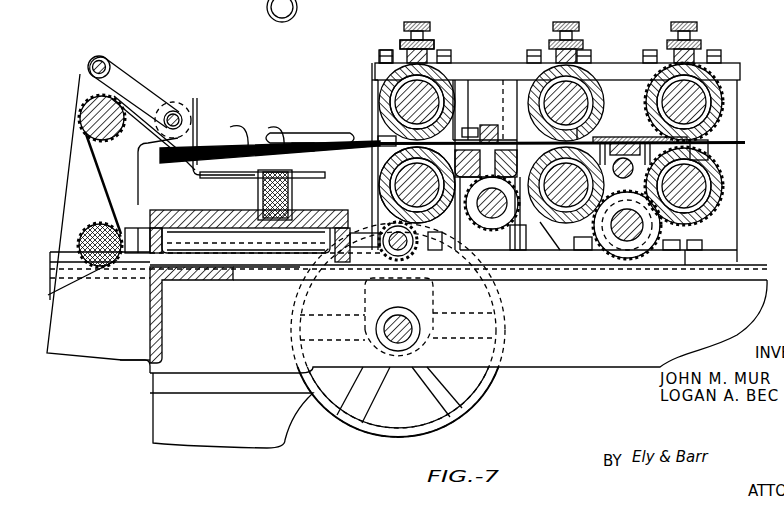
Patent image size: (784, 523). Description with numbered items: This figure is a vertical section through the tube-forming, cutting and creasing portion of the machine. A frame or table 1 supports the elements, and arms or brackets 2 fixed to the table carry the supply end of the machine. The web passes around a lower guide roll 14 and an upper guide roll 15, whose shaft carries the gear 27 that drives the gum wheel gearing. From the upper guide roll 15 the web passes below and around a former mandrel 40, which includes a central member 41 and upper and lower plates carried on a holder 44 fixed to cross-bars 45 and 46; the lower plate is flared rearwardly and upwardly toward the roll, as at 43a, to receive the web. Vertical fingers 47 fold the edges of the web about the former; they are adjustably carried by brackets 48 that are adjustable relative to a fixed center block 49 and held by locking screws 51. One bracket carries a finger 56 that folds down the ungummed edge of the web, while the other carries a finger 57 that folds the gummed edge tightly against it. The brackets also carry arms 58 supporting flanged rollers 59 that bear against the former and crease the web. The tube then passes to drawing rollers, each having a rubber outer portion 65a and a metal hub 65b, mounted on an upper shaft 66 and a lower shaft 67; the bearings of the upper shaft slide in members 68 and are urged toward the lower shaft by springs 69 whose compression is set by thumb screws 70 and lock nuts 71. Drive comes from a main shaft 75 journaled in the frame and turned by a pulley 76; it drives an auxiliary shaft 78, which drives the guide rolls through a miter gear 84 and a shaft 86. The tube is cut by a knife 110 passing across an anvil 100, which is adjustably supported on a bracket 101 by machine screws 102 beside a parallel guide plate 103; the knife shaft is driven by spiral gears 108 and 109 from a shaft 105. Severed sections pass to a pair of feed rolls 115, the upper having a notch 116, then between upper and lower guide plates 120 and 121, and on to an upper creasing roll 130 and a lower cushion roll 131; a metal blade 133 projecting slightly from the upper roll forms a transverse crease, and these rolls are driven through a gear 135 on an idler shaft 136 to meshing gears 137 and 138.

The frame or table 1 is at (165, 426).
The extending arms or brackets 2 is at (72, 355).
The lower guide roll 14 is at (92, 230).
The upper guide roll 15 is at (82, 112).
The gear 27 is at (108, 138).
The former mandrel 40 is at (242, 128).
The central member 41 is at (182, 152).
The flared portion of lower plate 43a is at (152, 112).
The holder 44 is at (160, 100).
The cross-bar 45 is at (103, 62).
The cross-bar 46 is at (185, 108).
The vertical fingers 47 is at (198, 106).
The brackets 48 is at (262, 194).
The fixed center block 49 is at (288, 196).
The locking screws 51 is at (296, 167).
The finger 56 is at (274, 140).
The finger 57 is at (302, 140).
The arms 58 is at (300, 140).
The flanged rollers 59 is at (380, 141).
The rubber outer portion 65a is at (385, 160).
The metal hub 65b is at (380, 102).
The upper shaft 66 is at (385, 118).
The lower shaft 67 is at (380, 205).
The members 68 is at (376, 86).
The springs 69 is at (380, 66).
The thumb screws 70 is at (420, 24).
The lock nuts 71 is at (430, 42).
The main shaft 75 is at (398, 338).
The pulley 76 is at (485, 396).
The auxiliary shaft 78 is at (414, 239).
The miter gear 84 is at (410, 252).
The shaft 86 is at (256, 254).
The anvil 100 is at (470, 128).
The bracket 101 is at (480, 88).
The machine screws 102 is at (496, 120).
The guide plate 103 is at (475, 115).
The shaft 105 is at (480, 222).
The spiral gear 108 is at (530, 252).
The spiral gear 109 is at (520, 226).
The knife 110 is at (538, 108).
The feed rolls 115 is at (582, 72).
The notch 116 is at (552, 55).
The upper guide plate 120 is at (625, 137).
The lower guide plate 121 is at (616, 172).
The upper creasing roll 130 is at (722, 90).
The lower cushion roll 131 is at (722, 165).
The metal blade 133 is at (712, 165).
The gear 135 is at (600, 250).
The idler shaft 136 is at (627, 234).
The gear 137 is at (722, 208).
The gear 138 is at (723, 117).